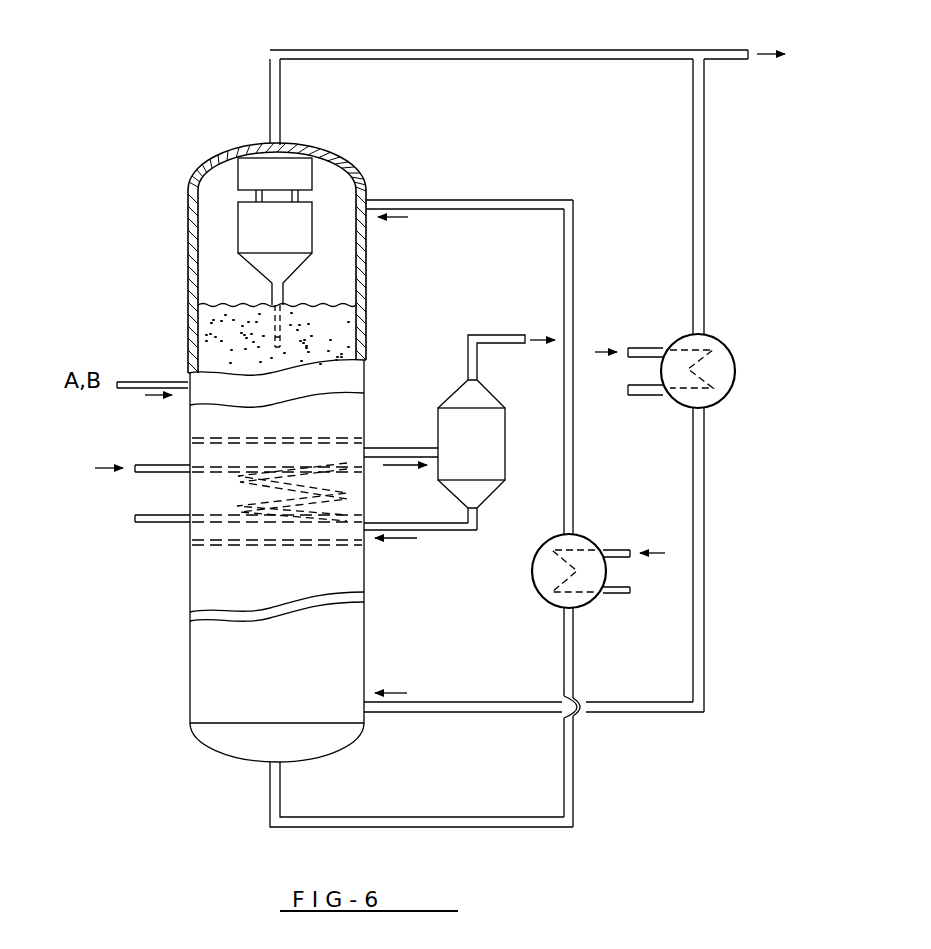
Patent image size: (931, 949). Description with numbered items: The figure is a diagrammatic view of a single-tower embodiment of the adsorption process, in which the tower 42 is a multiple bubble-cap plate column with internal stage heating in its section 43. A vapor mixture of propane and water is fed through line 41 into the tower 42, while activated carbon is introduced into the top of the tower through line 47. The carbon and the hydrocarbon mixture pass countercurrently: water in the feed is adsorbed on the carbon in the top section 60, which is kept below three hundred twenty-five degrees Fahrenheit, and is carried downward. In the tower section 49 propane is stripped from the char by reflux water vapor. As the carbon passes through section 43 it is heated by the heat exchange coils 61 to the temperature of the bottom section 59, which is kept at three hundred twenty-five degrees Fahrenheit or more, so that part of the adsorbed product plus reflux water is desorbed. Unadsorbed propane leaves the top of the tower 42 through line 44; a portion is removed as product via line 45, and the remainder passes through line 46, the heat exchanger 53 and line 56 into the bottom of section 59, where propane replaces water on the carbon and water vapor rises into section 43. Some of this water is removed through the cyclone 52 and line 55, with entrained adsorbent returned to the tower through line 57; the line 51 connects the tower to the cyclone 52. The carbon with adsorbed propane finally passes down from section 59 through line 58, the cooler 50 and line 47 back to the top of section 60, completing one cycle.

The line 41 is at (166, 380).
The tower 42 is at (188, 245).
The section 43 is at (271, 492).
The line 44 is at (487, 49).
The line 45 is at (728, 48).
The line 46 is at (704, 235).
The line 47 is at (468, 200).
The tower section 49 is at (277, 478).
The cooler 50 is at (588, 522).
The transfer line to separator 51 is at (430, 443).
The cyclone 52 is at (471, 444).
The heat exchanger 53 is at (712, 407).
The line 55 is at (505, 334).
The line 56 is at (455, 702).
The line 57 is at (432, 522).
The line 58 is at (400, 817).
The bottom section 59 is at (277, 682).
The top section 60 is at (277, 334).
The heat exchange coils 61 is at (162, 460).